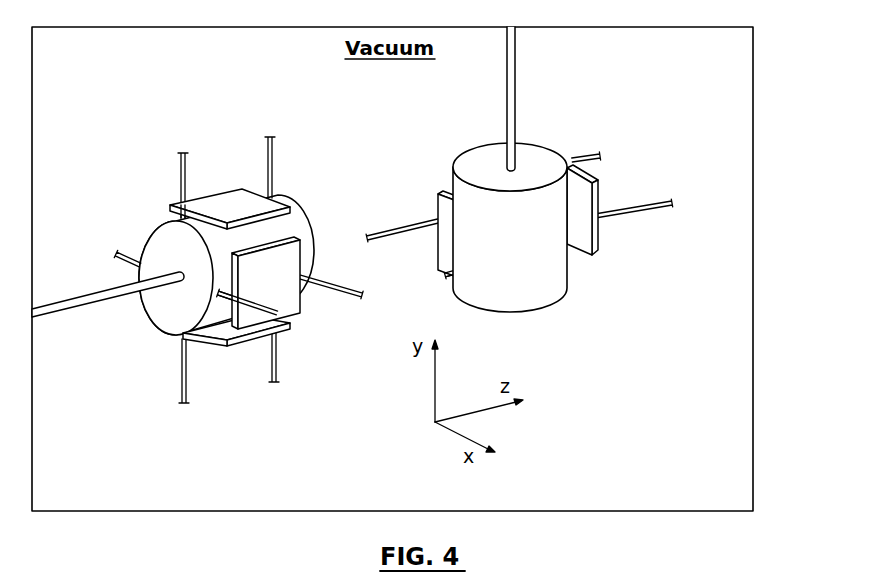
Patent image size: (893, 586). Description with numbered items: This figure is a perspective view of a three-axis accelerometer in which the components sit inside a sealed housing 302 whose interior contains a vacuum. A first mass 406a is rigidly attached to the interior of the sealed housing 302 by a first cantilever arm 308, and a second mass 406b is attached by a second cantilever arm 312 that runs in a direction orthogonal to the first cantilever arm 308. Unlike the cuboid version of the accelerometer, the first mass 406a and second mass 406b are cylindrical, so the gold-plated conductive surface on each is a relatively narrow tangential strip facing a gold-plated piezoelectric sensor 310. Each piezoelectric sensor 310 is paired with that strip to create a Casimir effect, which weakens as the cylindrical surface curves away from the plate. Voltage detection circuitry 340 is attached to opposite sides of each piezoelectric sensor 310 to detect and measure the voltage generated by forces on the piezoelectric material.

The sealed housing 302 is at (753, 300).
The first cantilever arm 308 is at (72, 303).
The piezoelectric sensor 310 is at (224, 198).
The second cantilever arm 312 is at (513, 91).
The voltage detection circuitry 340 is at (182, 170).
The first mass 406a is at (313, 238).
The second mass 406b is at (544, 152).